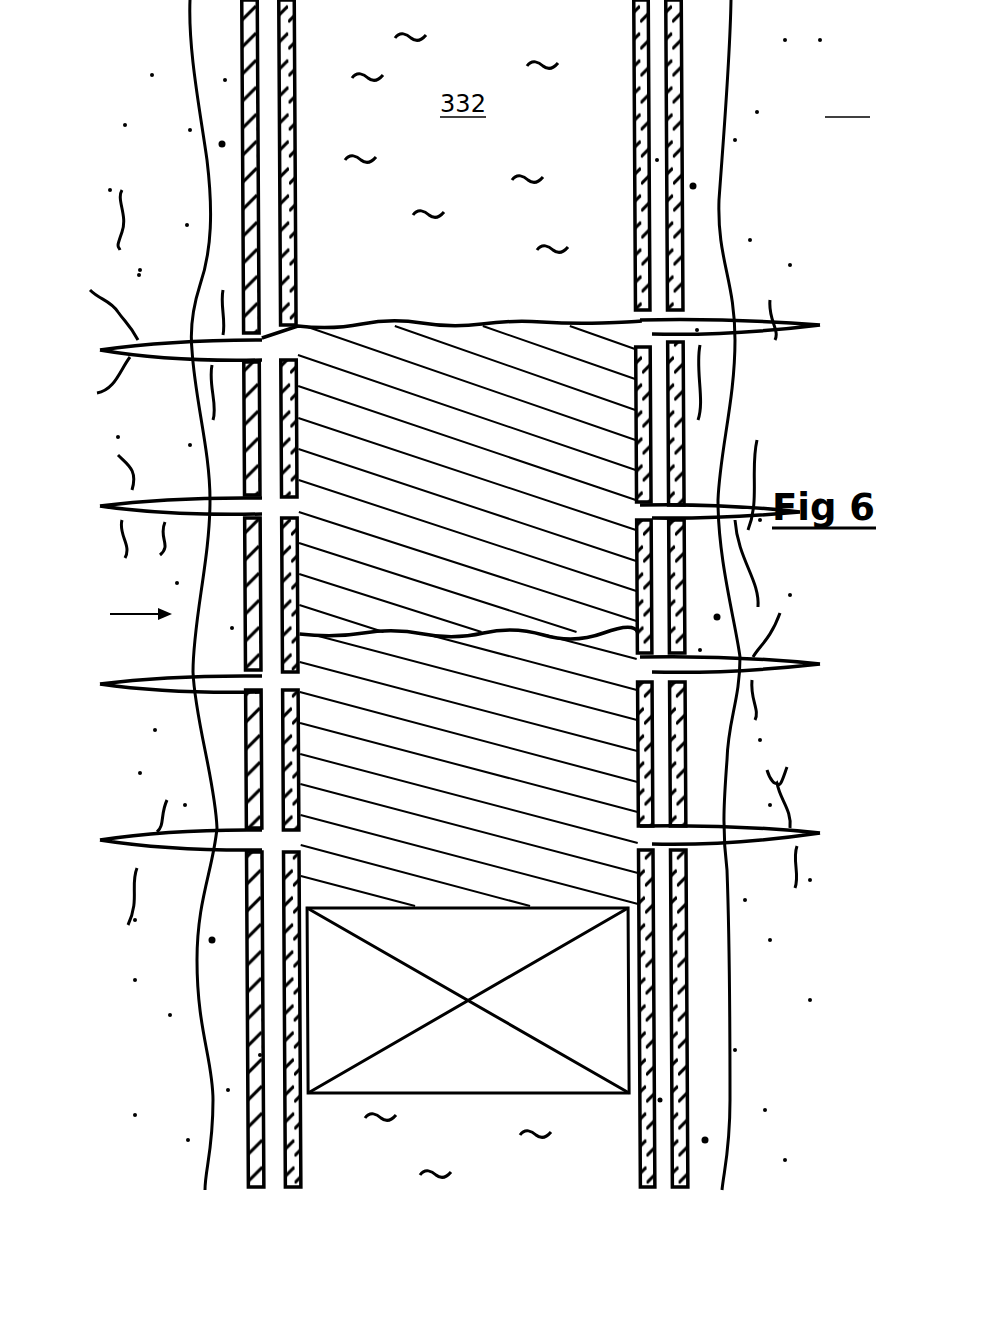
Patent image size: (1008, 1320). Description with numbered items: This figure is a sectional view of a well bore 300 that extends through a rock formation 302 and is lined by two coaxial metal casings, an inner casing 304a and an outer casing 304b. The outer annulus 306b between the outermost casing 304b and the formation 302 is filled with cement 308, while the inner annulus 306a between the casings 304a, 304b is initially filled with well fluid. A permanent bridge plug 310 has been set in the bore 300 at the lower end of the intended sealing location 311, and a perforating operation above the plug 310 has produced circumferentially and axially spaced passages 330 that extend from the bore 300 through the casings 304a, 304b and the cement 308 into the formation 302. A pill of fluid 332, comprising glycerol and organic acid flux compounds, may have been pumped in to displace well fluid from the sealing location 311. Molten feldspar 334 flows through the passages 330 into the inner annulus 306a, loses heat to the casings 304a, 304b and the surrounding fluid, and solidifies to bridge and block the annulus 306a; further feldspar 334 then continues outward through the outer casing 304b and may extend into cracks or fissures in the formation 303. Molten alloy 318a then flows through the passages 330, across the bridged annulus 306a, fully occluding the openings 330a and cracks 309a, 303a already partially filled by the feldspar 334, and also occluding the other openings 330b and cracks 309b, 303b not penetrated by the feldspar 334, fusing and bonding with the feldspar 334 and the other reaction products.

The well bore 300 is at (587, 40).
The rock formation 302 is at (489, 600).
The formation cracks or fissures 303 is at (757, 690).
The formation cracks partially filled by feldspar 303a is at (757, 452).
The formation cracks not penetrated by feldspar 303b is at (735, 548).
The inner bore-lining casing 304a is at (648, 165).
The outer bore-lining casing 304b is at (670, 198).
The inner annulus 306a is at (665, 290).
The outer annulus 306b is at (703, 258).
The cement 308 is at (740, 350).
The cement cracks partially filled by feldspar 309a is at (695, 408).
The cement cracks not penetrated by feldspar 309b is at (208, 409).
The permanent bridge plug 310 is at (660, 968).
The sealing location 311 is at (105, 606).
The molten alloy 318a is at (245, 515).
The perforated passages 330 is at (757, 655).
The openings partially filled by feldspar 330a is at (240, 690).
The openings not penetrated by feldspar 330b is at (240, 362).
The fluid pill or slug 332 is at (456, 204).
The molten feldspar 334 is at (640, 757).